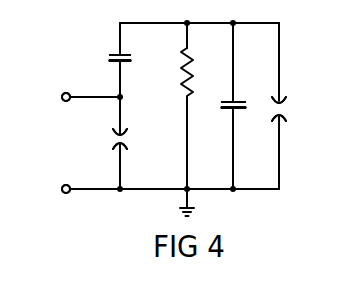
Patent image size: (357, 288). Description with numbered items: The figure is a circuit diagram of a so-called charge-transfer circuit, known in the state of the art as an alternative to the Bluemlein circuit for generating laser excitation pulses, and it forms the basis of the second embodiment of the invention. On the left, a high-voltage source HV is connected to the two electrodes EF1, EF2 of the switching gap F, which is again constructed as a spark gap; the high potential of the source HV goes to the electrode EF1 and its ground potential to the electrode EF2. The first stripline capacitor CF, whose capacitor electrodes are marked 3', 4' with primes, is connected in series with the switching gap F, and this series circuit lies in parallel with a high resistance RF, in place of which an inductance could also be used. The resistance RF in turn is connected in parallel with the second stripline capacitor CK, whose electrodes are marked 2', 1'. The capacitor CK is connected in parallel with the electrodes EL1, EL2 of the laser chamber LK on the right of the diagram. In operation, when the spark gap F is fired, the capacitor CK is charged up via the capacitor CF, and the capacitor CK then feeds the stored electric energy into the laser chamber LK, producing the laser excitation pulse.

The first stripline capacitor CF is at (128, 62).
The capacitor electrode 3' is at (109, 40).
The capacitor electrode 4' is at (109, 74).
The switching gap F is at (116, 138).
The electrode of the switching gap EF1 is at (128, 132).
The electrode of the switching gap EF2 is at (127, 146).
The high-voltage source HV is at (65, 143).
The high resistance RF is at (193, 62).
The second stripline capacitor CK is at (238, 110).
The capacitor electrode 2' is at (228, 88).
The capacitor electrode 1' is at (226, 124).
The laser chamber LK is at (293, 108).
The electrode of the laser chamber EL2 is at (287, 101).
The electrode of the laser chamber EL1 is at (287, 117).